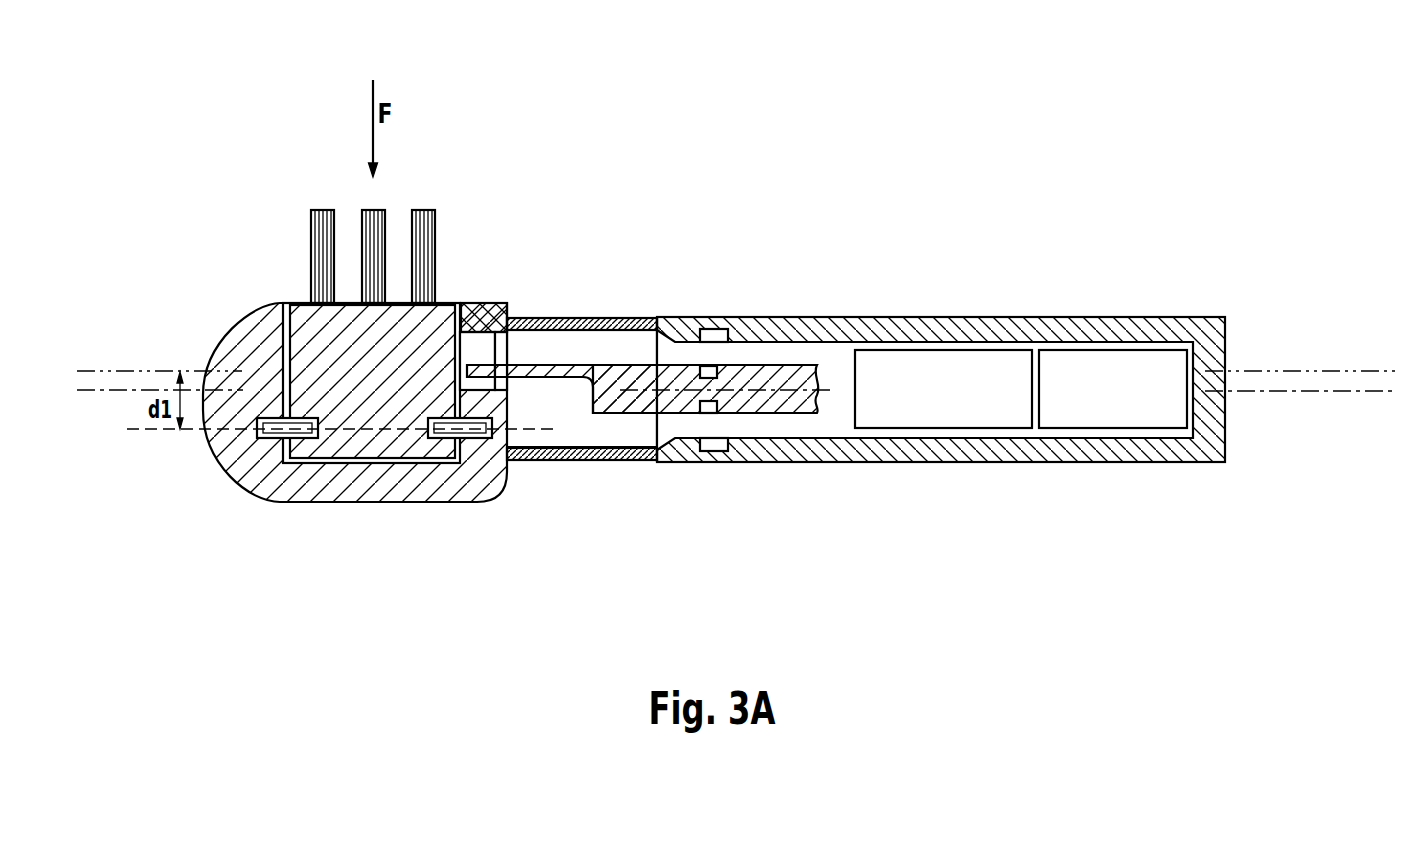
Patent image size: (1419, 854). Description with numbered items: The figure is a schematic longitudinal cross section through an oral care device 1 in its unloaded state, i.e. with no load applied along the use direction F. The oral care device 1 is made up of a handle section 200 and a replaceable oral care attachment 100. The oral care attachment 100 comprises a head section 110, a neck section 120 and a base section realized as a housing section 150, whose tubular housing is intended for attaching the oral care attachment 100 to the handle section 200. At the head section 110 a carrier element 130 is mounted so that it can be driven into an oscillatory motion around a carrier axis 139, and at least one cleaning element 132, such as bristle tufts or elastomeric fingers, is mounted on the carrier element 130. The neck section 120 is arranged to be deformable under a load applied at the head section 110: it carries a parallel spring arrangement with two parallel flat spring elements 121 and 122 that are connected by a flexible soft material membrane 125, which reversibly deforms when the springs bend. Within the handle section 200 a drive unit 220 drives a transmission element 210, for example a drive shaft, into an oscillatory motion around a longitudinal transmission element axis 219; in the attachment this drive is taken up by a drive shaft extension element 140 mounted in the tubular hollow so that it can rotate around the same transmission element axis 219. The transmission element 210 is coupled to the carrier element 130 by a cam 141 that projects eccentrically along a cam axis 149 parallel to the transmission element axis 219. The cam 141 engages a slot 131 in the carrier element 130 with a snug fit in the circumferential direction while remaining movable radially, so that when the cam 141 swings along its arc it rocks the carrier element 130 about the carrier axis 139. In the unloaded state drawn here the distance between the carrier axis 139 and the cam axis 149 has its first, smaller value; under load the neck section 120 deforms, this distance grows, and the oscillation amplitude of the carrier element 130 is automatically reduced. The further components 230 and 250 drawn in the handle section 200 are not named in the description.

The oral care device 1 is at (733, 359).
The oral care attachment 100 is at (735, 340).
The head section 110 is at (340, 394).
The neck section 120 is at (642, 372).
The flat spring element 121 is at (577, 461).
The flat spring element 122 is at (603, 318).
The flexible soft material membrane 125 is at (568, 352).
The carrier element 130 is at (348, 300).
The slot 131 is at (477, 353).
The cleaning element 132 is at (360, 252).
The carrier axis 139 is at (153, 432).
The drive shaft extension element 140 is at (610, 400).
The cam 141 is at (523, 372).
The cam axis 149 is at (97, 371).
The housing section 150 is at (683, 318).
The handle section 200 is at (733, 367).
The transmission element 210 is at (754, 358).
The longitudinal transmission element axis 219 is at (93, 391).
The drive unit 220 is at (947, 407).
The battery 230 is at (1116, 408).
The handle housing 250 is at (865, 330).